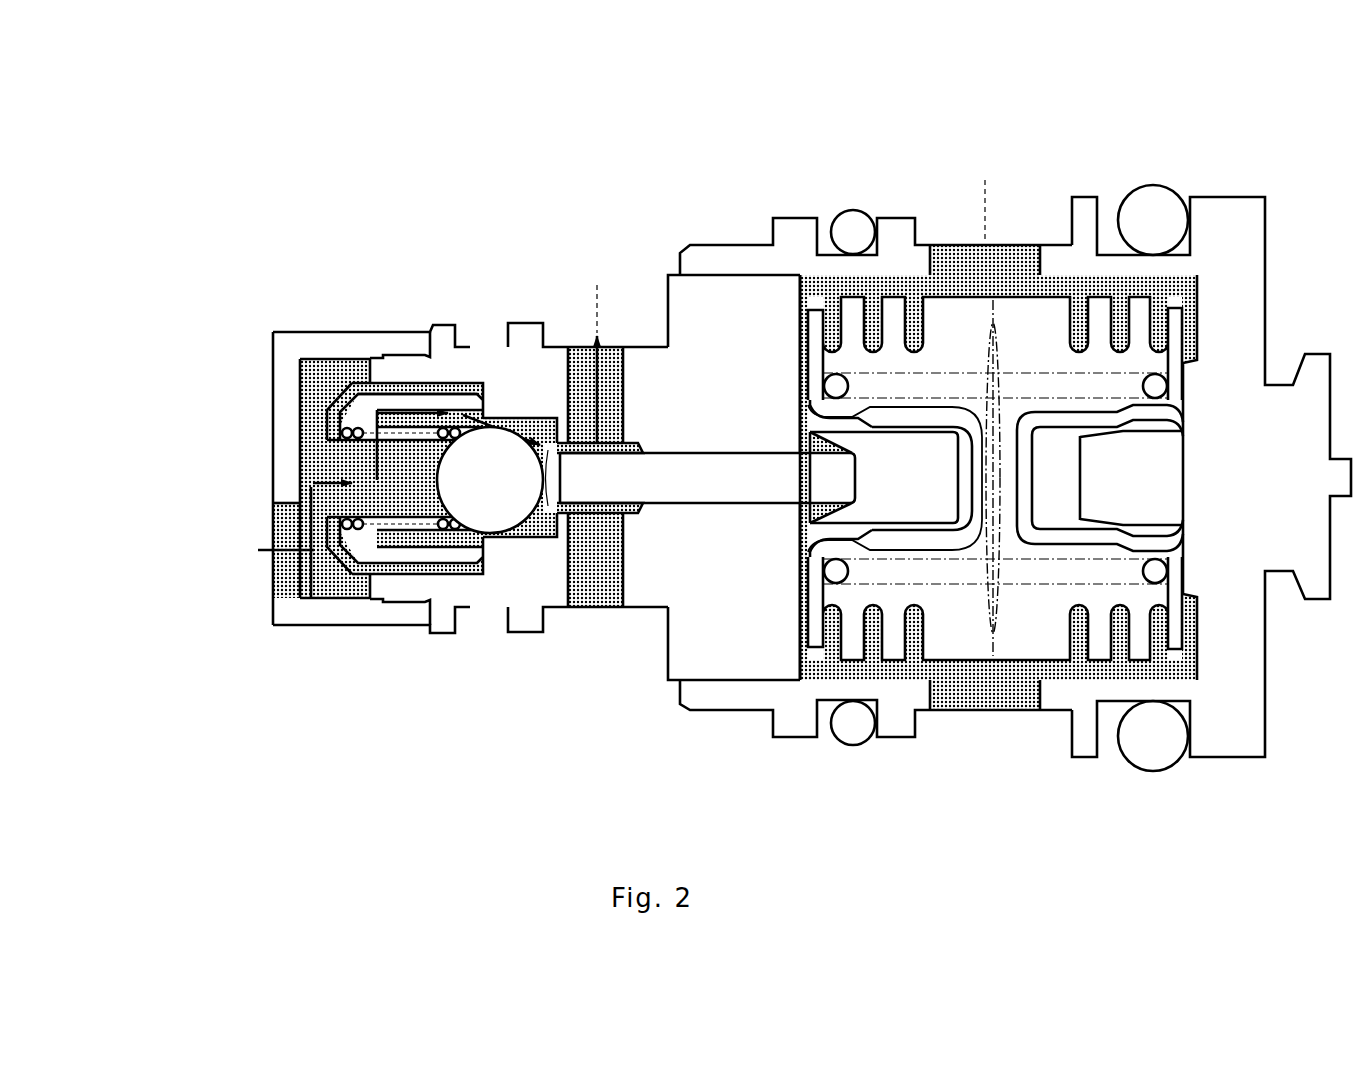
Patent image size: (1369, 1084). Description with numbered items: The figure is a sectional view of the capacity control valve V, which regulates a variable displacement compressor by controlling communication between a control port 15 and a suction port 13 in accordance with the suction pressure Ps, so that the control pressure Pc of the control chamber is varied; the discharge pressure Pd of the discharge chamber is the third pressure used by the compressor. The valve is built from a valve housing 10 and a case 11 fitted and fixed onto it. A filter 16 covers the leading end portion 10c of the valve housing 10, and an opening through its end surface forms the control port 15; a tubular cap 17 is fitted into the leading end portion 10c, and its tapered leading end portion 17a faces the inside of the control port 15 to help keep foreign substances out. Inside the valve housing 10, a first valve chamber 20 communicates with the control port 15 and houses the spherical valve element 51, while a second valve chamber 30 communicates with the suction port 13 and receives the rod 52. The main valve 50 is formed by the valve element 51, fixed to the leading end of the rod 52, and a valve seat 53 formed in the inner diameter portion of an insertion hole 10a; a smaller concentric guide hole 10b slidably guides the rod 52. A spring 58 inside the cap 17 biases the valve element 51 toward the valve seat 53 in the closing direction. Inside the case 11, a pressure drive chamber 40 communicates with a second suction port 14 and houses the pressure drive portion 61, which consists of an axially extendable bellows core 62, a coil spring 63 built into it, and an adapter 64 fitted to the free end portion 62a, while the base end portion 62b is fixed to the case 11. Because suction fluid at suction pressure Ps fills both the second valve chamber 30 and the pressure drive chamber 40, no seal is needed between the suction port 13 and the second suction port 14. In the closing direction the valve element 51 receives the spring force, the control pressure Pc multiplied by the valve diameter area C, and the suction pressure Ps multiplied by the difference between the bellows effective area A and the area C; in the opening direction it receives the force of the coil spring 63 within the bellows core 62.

The valve housing 10 is at (752, 290).
The insertion hole 10a is at (500, 420).
The guide hole 10b is at (717, 468).
The leading end portion 10c is at (378, 392).
The case 11 is at (1215, 200).
The suction port 13 is at (578, 390).
The second suction port 14 is at (936, 262).
The control port 15 is at (285, 592).
The filter 16 is at (303, 345).
The tubular cap 17 is at (380, 378).
The tapered leading end portion 17a is at (326, 548).
The first valve chamber 20 is at (419, 450).
The second valve chamber 30 is at (609, 403).
The pressure drive chamber 40 is at (814, 288).
The main valve 50 is at (600, 725).
The valve element 51 is at (488, 497).
The rod 52 is at (745, 488).
The valve seat 53 is at (576, 520).
The spring 58 is at (355, 530).
The pressure drive portion 61 is at (1000, 600).
The bellows core 62 is at (1090, 640).
The free end portion 62a is at (812, 605).
The base end portion 62b is at (1170, 742).
The coil spring 63 is at (846, 585).
The adapter 64 is at (925, 520).
The bellows effective area A is at (995, 685).
The valve diameter area C is at (609, 545).
The capacity control valve V is at (1244, 146).
The discharge pressure Pd is at (182, 550).
The control pressure Pc is at (260, 550).
The suction pressure Ps is at (792, 296).